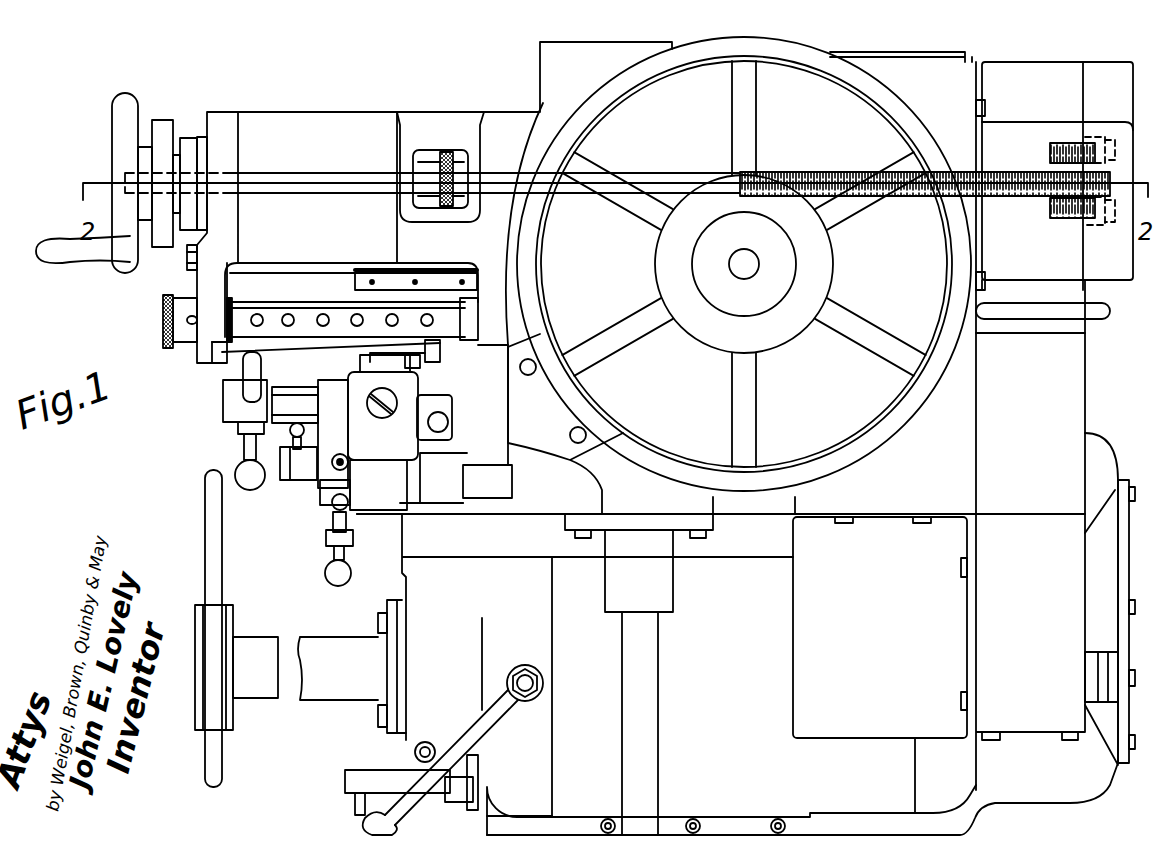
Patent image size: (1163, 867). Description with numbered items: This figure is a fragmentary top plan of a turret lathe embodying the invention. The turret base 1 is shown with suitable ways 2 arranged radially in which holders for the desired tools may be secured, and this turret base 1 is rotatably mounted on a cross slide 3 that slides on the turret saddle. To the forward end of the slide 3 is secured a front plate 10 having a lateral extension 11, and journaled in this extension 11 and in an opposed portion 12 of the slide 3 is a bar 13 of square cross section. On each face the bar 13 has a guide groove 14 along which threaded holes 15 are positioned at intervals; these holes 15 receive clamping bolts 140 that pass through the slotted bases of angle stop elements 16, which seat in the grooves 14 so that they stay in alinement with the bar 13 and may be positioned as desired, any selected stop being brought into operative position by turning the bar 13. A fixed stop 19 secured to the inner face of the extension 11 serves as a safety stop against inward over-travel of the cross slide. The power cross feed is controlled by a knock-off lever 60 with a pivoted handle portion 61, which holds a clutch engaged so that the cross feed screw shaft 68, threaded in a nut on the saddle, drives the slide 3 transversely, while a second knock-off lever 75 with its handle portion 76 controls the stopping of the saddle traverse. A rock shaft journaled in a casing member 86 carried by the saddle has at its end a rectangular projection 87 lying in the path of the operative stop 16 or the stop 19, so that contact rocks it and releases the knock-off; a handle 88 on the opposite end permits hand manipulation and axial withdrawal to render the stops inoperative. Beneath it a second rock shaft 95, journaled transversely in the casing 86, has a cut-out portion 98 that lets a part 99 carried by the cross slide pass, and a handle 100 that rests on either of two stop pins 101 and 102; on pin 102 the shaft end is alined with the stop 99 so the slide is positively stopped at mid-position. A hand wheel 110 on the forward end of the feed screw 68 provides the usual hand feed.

The turret base 1 is at (865, 408).
The ways 2 is at (612, 318).
The cross slide 3 is at (492, 122).
The front plate 10 is at (207, 118).
The lateral extension 11 is at (200, 352).
The portion of the slide 12 is at (505, 330).
The bar 13 is at (288, 305).
The guide groove 14 is at (318, 320).
The threaded holes 15 is at (258, 315).
The angle stop elements 16 is at (440, 348).
The fixed stop 19 is at (222, 362).
The knock-off lever 60 is at (240, 420).
The handle portion 61 is at (252, 478).
The cross feed screw shaft 68 is at (300, 172).
The knock-off lever 75 is at (335, 508).
The handle portion 76 is at (333, 582).
The casing member 86 is at (368, 421).
The rectangular projection 87 is at (421, 423).
The handle 88 is at (352, 498).
The second rock shaft 95 is at (300, 458).
The cut-out portion 98 is at (443, 478).
The part carried by the cross slide 99 is at (478, 488).
The handle 100 is at (296, 434).
The stop pin 101 is at (318, 402).
The stop pin 102 is at (305, 472).
The hand wheel 110 is at (118, 108).
The clamping bolts 140 is at (413, 360).